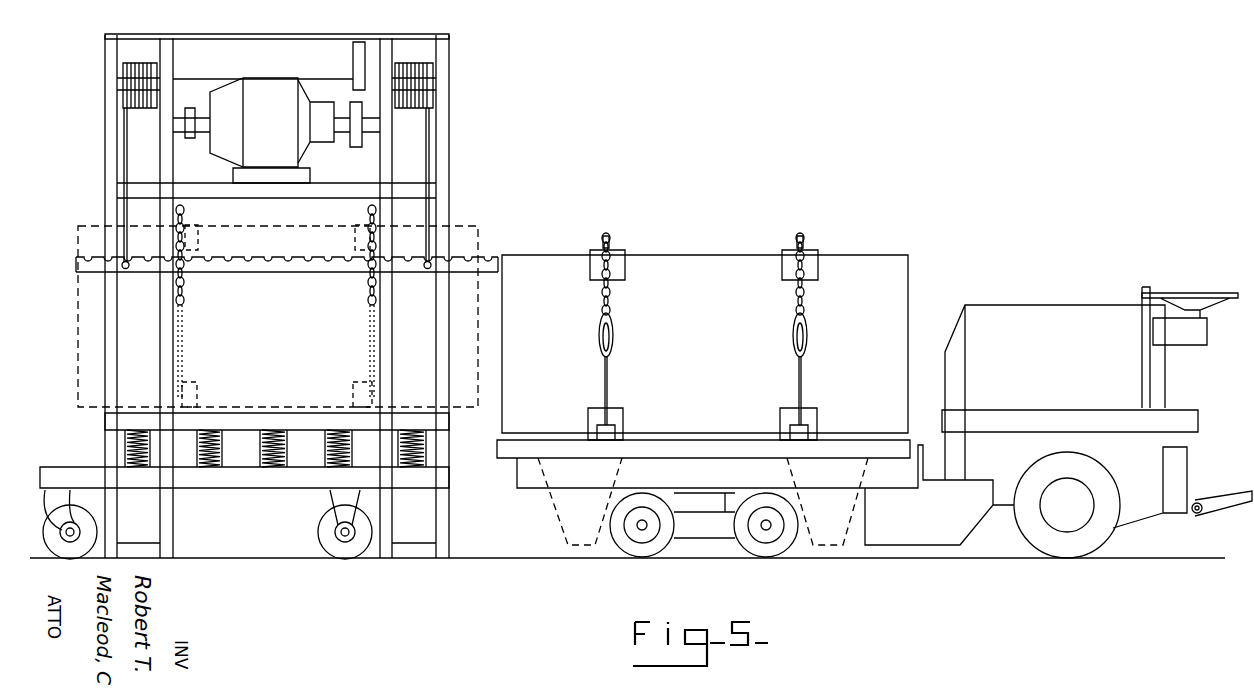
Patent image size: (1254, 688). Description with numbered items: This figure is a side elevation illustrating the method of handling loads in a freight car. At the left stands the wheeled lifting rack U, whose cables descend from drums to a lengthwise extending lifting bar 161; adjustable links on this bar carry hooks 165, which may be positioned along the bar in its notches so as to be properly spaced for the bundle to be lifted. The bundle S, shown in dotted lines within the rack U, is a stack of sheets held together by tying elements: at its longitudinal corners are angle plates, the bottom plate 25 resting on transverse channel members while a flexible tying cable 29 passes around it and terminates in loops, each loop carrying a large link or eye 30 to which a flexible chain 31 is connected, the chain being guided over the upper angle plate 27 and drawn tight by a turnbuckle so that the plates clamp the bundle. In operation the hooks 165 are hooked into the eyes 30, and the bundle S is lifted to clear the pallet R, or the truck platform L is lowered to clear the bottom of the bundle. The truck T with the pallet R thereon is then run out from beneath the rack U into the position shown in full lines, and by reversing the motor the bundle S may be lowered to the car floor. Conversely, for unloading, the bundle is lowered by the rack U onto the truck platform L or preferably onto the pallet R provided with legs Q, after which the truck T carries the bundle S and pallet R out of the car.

The lifting rack U is at (455, 72).
The bundle S is at (466, 227).
The lifting bar 161 is at (284, 271).
The hooks 165 is at (368, 292).
The angle plate 27 is at (818, 263).
The flexible chain 31 is at (840, 296).
The link or eye 30 is at (838, 340).
The tying cable 29 is at (833, 380).
The angle plate 25 is at (834, 415).
The pallet R is at (497, 447).
The truck platform L is at (528, 485).
The legs Q is at (848, 540).
The truck T is at (1040, 305).